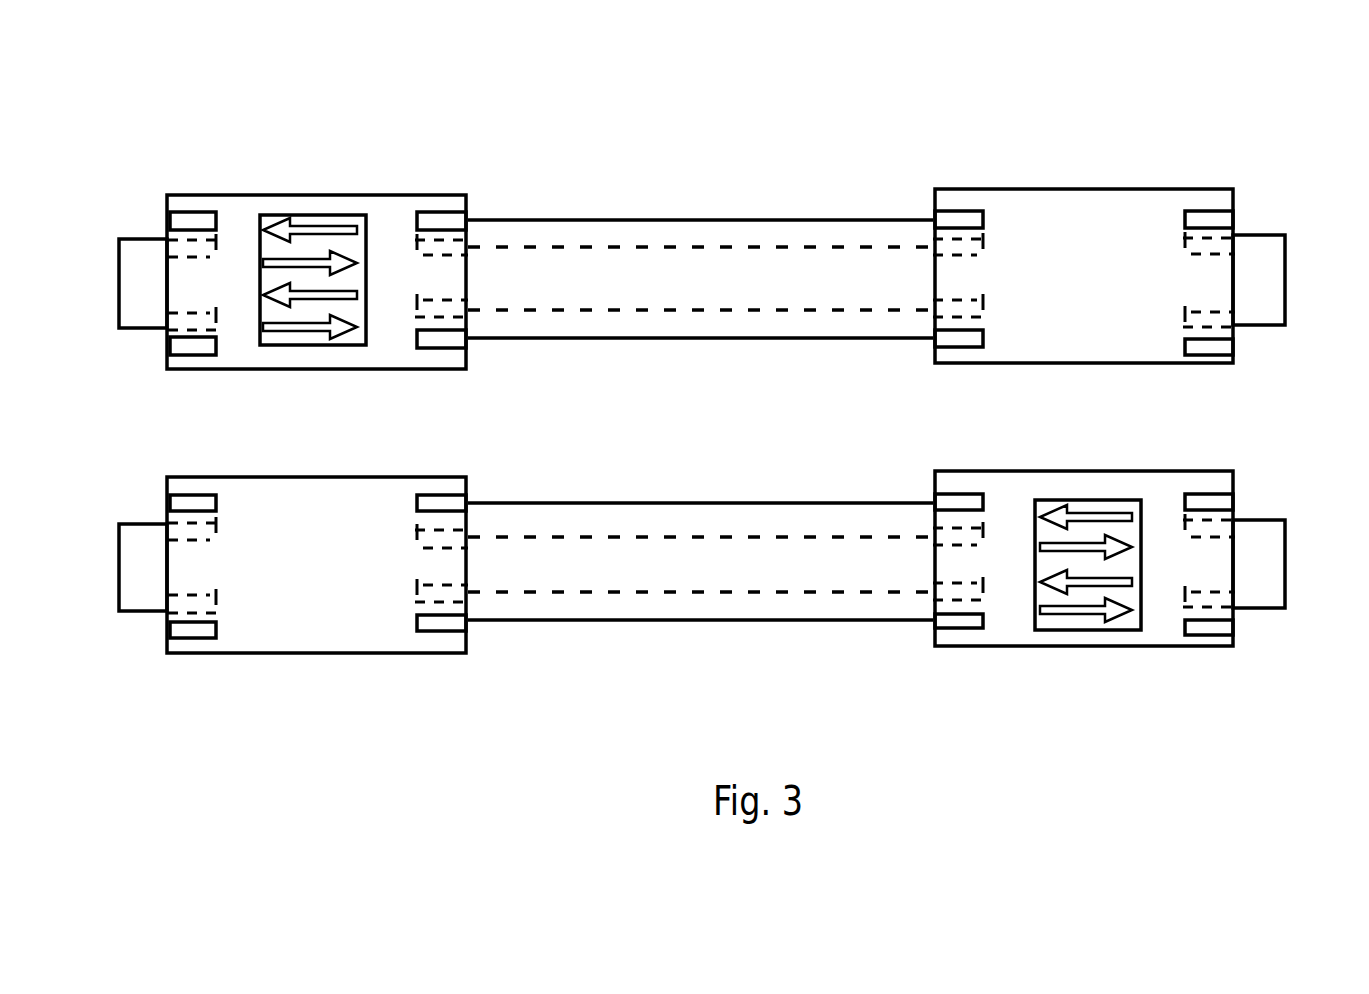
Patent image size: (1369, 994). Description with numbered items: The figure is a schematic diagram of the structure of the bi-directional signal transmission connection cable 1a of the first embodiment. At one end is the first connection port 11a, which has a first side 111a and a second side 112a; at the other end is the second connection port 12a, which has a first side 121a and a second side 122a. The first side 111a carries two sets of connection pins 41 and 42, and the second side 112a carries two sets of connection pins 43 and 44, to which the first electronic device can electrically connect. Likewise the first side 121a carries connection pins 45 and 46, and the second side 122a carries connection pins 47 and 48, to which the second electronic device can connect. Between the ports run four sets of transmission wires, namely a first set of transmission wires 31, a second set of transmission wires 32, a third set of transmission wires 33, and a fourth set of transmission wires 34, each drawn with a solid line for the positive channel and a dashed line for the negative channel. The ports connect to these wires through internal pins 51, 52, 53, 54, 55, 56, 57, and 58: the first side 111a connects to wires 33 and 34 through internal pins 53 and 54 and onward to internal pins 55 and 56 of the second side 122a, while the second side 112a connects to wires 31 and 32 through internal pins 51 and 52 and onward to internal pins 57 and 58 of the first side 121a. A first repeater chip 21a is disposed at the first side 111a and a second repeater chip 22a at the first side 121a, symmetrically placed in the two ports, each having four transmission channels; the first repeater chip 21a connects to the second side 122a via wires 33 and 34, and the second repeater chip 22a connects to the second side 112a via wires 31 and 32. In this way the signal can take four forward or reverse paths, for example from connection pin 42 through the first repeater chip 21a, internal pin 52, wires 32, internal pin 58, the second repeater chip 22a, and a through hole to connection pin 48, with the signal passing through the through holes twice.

The bi-directional signal transmission connection cable 1a is at (74, 72).
The first connection port 11a is at (106, 380).
The first side of the first connection port 111a is at (197, 371).
The second side of the first connection port 112a is at (197, 475).
The second connection port 12a is at (1297, 468).
The first side of the second connection port 121a is at (1210, 469).
The second side of the second connection port 122a is at (1202, 365).
The first repeater chip 21a is at (323, 215).
The second repeater chip 22a is at (1085, 632).
The first set of transmission wires 31 is at (810, 593).
The second set of transmission wires 32 is at (580, 537).
The third set of transmission wires 33 is at (805, 310).
The fourth set of transmission wires 34 is at (578, 247).
The connection pin 41 is at (211, 234).
The connection pin 42 is at (211, 331).
The connection pin 43 is at (211, 517).
The connection pin 44 is at (211, 613).
The connection pin 45 is at (1191, 515).
The connection pin 46 is at (1191, 610).
The connection pin 47 is at (1191, 232).
The connection pin 48 is at (1191, 330).
The internal pin 51 is at (425, 605).
The internal pin 52 is at (425, 521).
The internal pin 53 is at (425, 321).
The internal pin 54 is at (425, 233).
The internal pin 55 is at (981, 320).
The internal pin 56 is at (981, 233).
The internal pin 57 is at (978, 602).
The internal pin 58 is at (978, 519).